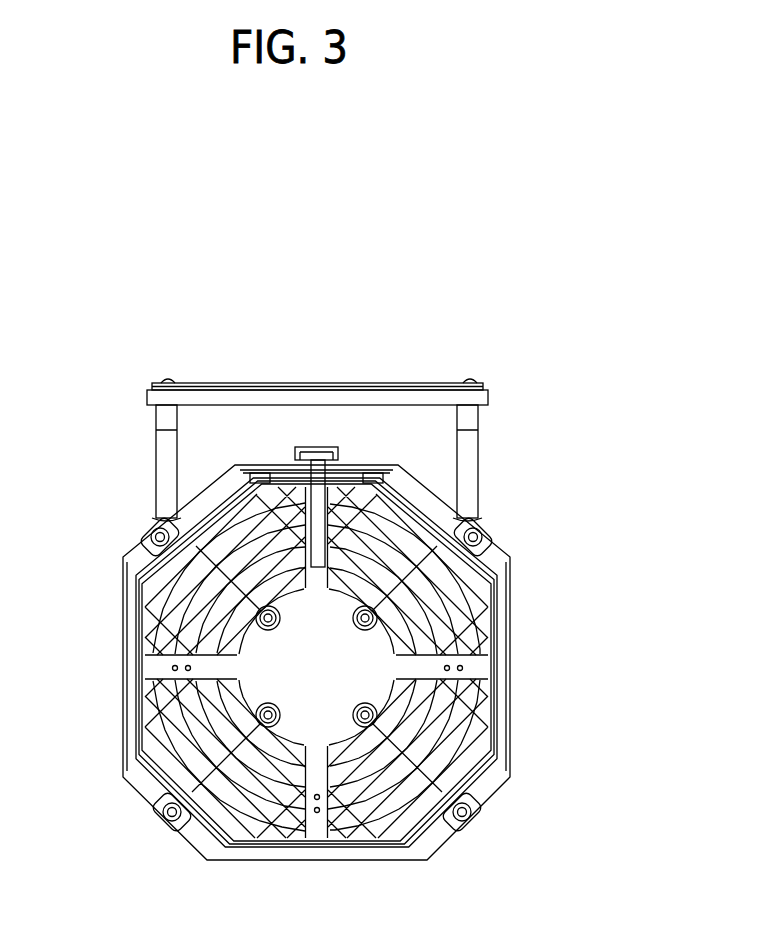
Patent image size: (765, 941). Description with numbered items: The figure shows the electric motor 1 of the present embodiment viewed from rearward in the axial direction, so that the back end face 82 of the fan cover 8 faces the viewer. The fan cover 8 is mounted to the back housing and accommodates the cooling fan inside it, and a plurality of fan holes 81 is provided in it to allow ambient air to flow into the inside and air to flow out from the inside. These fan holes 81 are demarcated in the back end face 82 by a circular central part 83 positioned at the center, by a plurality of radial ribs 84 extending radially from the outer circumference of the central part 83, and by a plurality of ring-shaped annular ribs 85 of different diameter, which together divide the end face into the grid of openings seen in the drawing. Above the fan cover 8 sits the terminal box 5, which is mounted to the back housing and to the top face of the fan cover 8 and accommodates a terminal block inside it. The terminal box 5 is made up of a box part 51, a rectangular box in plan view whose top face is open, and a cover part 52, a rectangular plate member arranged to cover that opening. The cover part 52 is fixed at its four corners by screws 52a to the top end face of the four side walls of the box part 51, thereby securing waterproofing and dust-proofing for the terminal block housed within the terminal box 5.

The electric motor 1 is at (511, 209).
The terminal box 5 is at (388, 384).
The box part 51 is at (268, 420).
The cover part 52 is at (328, 383).
The screws 52a is at (167, 380).
The fan cover 8 is at (510, 653).
The fan holes 81 is at (470, 693).
The back end face 82 is at (490, 778).
The central part 83 is at (272, 668).
The radial ribs 84 is at (487, 577).
The annular ribs 85 is at (478, 513).